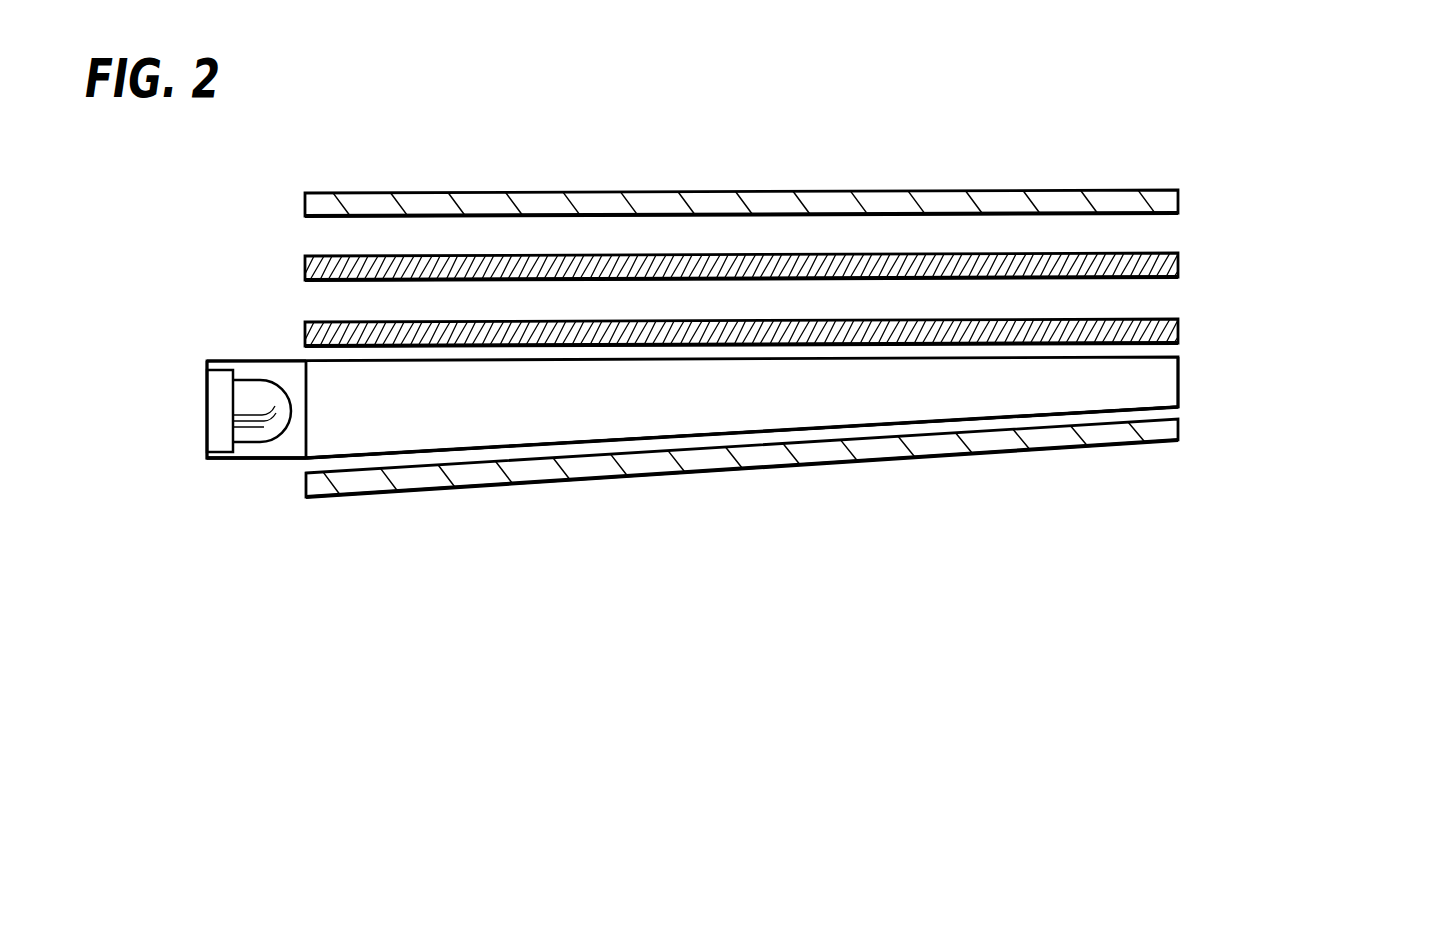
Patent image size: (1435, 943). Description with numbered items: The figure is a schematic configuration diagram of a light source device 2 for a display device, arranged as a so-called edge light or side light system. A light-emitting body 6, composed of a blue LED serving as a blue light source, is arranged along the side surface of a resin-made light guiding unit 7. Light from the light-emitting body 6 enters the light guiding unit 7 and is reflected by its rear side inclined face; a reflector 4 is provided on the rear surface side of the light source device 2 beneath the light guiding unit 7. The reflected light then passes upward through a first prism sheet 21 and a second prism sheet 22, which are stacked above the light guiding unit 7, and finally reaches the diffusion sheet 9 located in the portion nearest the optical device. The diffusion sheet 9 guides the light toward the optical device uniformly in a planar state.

The light source device 2 is at (493, 119).
The diffusion sheet 9 is at (1119, 198).
The second prism sheet 22 is at (1180, 265).
The first prism sheet 21 is at (1180, 327).
The light guiding unit 7 is at (358, 420).
The light-emitting body 6 is at (255, 422).
The reflector 4 is at (1068, 432).